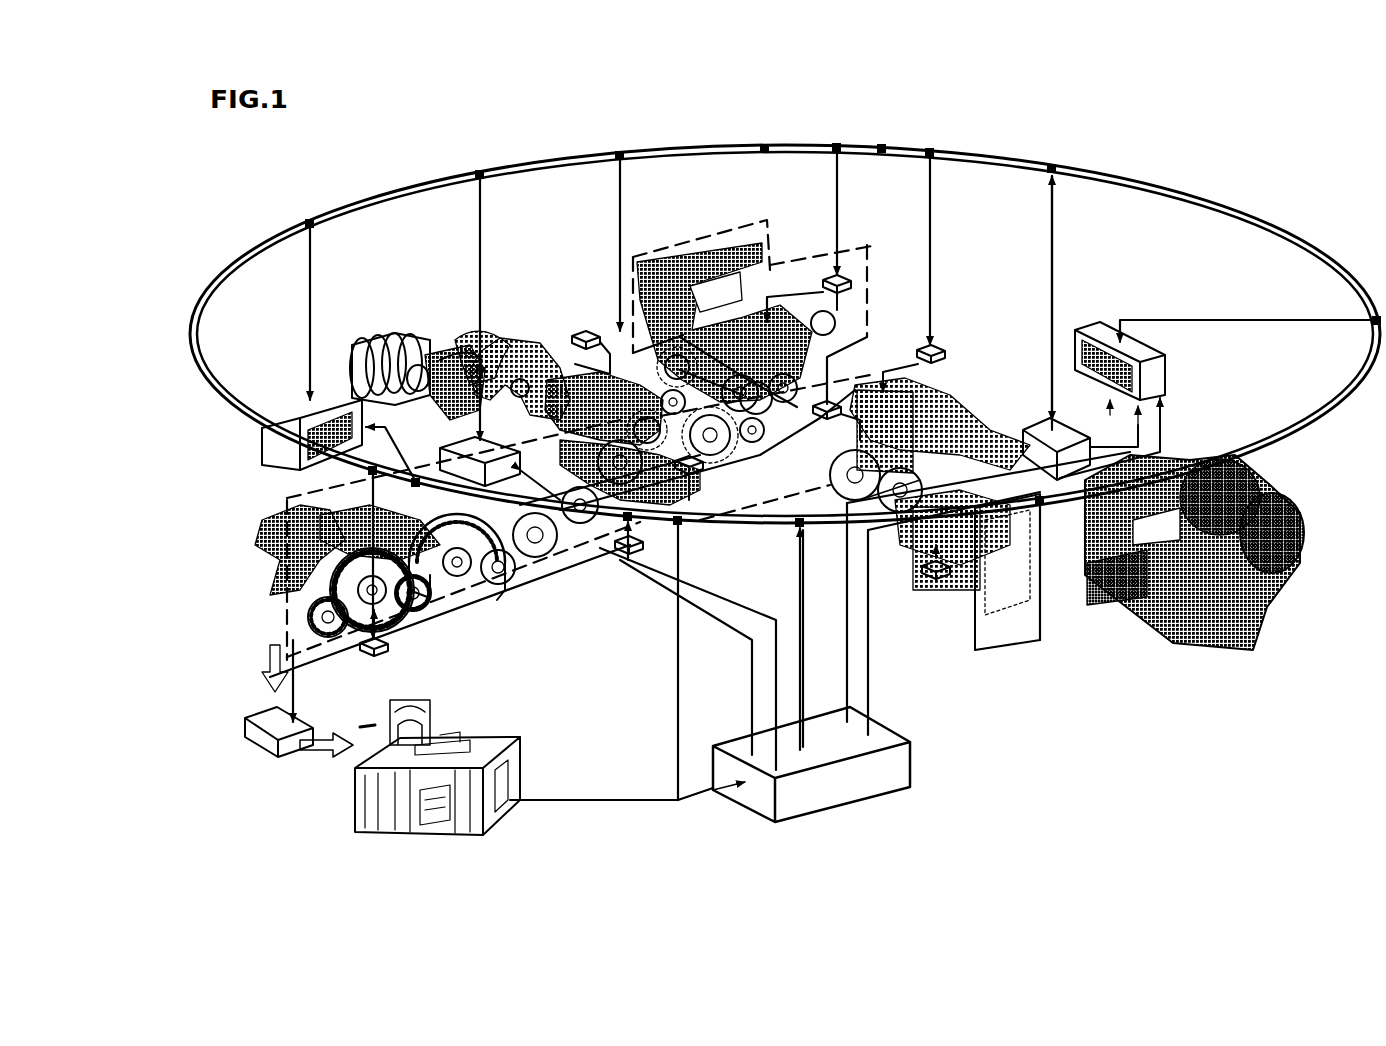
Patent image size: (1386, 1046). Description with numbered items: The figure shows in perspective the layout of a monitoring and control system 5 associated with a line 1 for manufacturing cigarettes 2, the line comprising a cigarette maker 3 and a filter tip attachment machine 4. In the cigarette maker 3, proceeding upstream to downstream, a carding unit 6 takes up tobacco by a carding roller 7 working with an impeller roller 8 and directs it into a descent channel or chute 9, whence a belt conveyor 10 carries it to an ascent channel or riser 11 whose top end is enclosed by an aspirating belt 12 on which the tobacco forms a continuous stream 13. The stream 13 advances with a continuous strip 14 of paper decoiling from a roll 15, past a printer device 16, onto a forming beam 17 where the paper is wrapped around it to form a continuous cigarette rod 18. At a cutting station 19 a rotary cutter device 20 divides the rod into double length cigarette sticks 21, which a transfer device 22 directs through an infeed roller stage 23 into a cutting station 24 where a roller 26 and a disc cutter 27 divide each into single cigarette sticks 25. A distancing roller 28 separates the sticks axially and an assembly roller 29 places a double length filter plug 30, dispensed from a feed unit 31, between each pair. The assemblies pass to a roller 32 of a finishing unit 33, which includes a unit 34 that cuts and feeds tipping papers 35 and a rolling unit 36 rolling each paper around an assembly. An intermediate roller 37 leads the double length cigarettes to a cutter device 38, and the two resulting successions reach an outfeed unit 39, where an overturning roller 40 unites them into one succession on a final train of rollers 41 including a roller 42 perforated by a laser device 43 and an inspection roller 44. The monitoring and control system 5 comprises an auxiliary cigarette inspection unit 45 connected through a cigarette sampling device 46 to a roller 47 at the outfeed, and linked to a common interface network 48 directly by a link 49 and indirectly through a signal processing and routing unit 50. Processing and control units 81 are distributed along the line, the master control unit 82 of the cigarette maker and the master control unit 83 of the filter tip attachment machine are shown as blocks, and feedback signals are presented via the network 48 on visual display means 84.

The line 1 is at (560, 350).
The cigarettes 2 is at (272, 581).
The cigarette maker 3 is at (1123, 690).
The filter tip attachment machine 4 is at (688, 250).
The monitoring and control system 5 is at (614, 650).
The carding unit 6 is at (1308, 513).
The carding roller 7 is at (1279, 518).
The impeller roller 8 is at (1218, 535).
The descent channel or chute 9 is at (1245, 602).
The belt conveyor 10 is at (1220, 652).
The ascent channel or riser 11 is at (1168, 613).
The aspirating belt 12 is at (1142, 537).
The continuous stream 13 is at (1062, 518).
The continuous strip of paper 14 is at (1020, 580).
The roll 15 is at (925, 528).
The printer device 16 is at (973, 590).
The forming beam 17 is at (980, 440).
The continuous cigarette rod 18 is at (991, 383).
The cutting station 19 is at (851, 445).
The rotary cutter device 20 is at (850, 395).
The cigarette sticks 21 is at (800, 330).
The transfer device 22 is at (785, 318).
The infeed roller stage 23 is at (770, 400).
The cutting station 24 is at (728, 446).
The single cigarette sticks 25 is at (737, 378).
The roller 26 is at (748, 418).
The disc cutter 27 is at (755, 400).
The distancing roller 28 is at (712, 458).
The assembly roller 29 is at (668, 390).
The double length filter plug 30 is at (674, 405).
The feed unit 31 is at (672, 250).
The roller 32 is at (612, 385).
The finishing unit 33 is at (513, 363).
The unit 34 is at (545, 370).
The tipping papers 35 is at (614, 556).
The rolling unit 36 is at (473, 363).
The intermediate roller 37 is at (468, 572).
The cutter device 38 is at (530, 548).
The outfeed unit 39 is at (243, 533).
The overturning roller 40 is at (412, 340).
The final train of rollers 41 is at (397, 660).
The roller 42 is at (317, 415).
The laser device 43 is at (390, 350).
The inspection roller 44 is at (325, 600).
The auxiliary cigarette inspection unit 45 is at (355, 798).
The cigarette sampling device 46 is at (255, 735).
The roller 47 is at (305, 613).
The common interface network 48 is at (1112, 168).
The link 49 is at (675, 768).
The signal processing and routing unit 50 is at (858, 785).
The processing and control units 81 is at (578, 330).
The master control unit 82 is at (1108, 341).
The master control unit 83 is at (472, 352).
The visual display means 84 is at (278, 402).